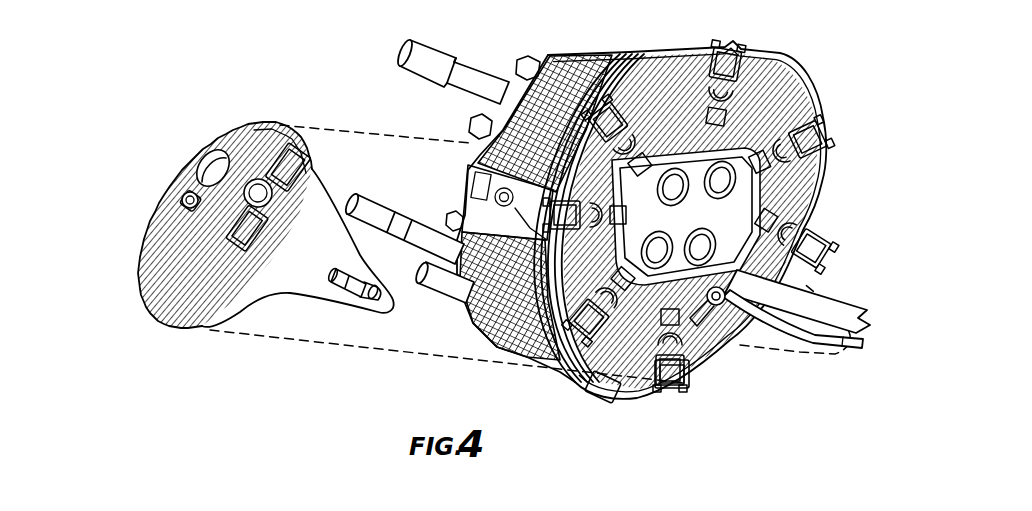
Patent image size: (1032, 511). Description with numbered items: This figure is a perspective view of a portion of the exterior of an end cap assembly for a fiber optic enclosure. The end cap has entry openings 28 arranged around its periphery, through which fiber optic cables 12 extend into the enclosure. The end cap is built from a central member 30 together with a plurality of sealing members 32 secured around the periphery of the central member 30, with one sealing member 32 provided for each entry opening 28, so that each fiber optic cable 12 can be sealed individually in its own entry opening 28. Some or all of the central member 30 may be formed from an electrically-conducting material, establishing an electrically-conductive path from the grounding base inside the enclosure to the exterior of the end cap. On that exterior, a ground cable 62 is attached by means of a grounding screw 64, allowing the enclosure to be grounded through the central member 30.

The fiber optic cable 12 is at (833, 300).
The entry opening 28 is at (220, 163).
The central member 30 is at (163, 207).
The sealing member 32 is at (270, 203).
The ground cable 62 is at (793, 354).
The grounding screw 64 is at (353, 307).